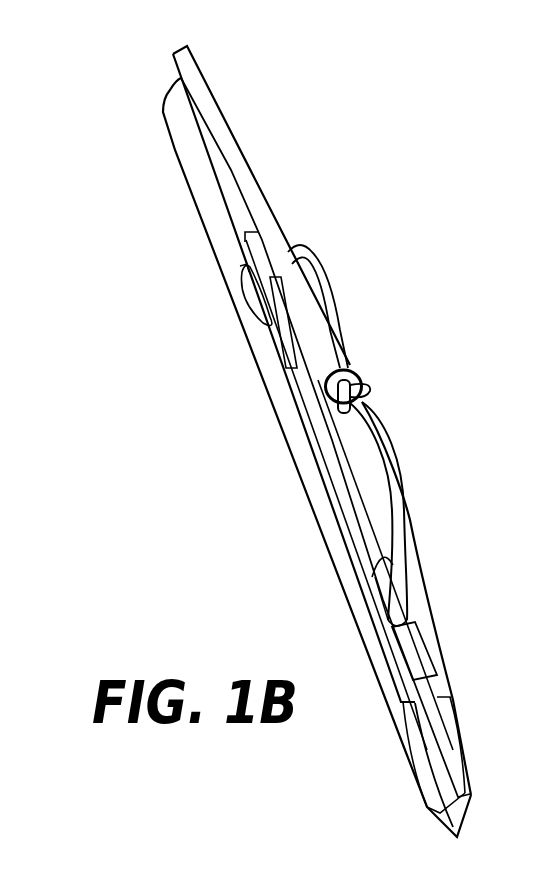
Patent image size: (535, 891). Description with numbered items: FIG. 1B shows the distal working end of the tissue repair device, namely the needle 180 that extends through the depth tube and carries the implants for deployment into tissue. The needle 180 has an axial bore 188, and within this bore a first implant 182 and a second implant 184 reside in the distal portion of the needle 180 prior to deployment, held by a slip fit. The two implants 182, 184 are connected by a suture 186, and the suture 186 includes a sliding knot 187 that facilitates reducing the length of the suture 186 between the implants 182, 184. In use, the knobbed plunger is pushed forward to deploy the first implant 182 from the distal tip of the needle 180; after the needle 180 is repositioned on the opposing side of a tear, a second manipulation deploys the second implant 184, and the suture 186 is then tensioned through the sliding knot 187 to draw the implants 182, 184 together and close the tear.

The needle 180 is at (124, 248).
The first implant 182 is at (412, 652).
The second implant 184 is at (277, 332).
The suture 186 is at (233, 128).
The sliding knot 187 is at (358, 377).
The axial bore 188 is at (295, 415).